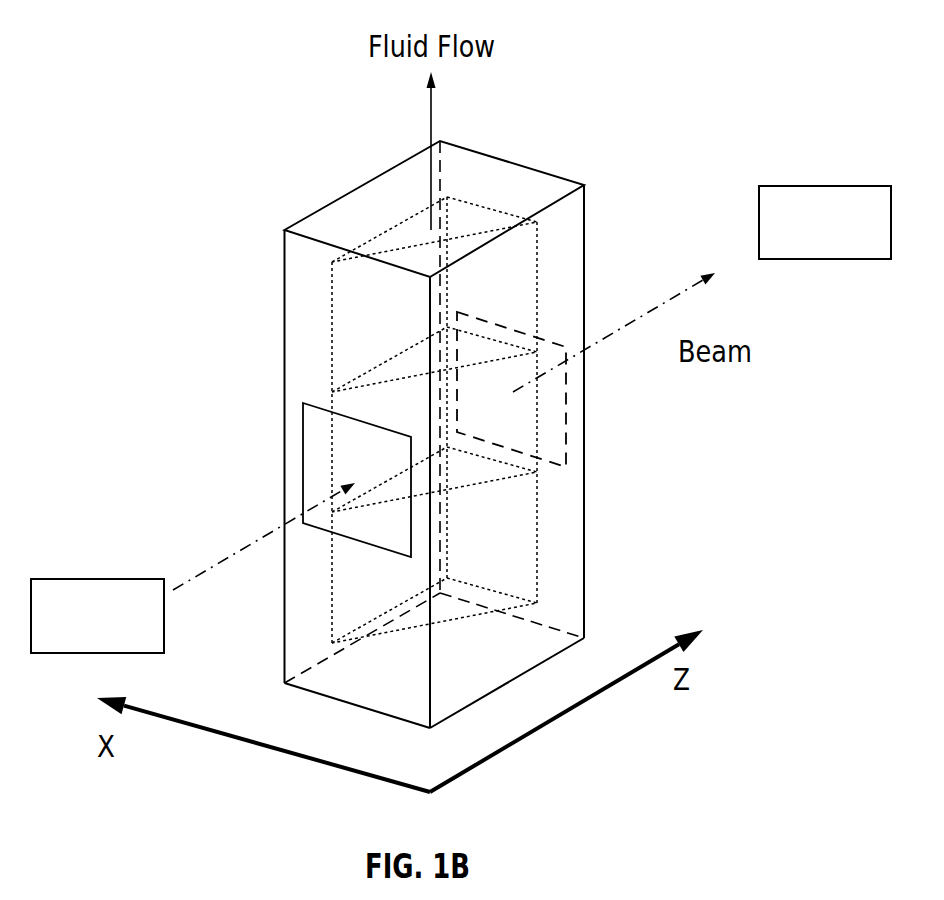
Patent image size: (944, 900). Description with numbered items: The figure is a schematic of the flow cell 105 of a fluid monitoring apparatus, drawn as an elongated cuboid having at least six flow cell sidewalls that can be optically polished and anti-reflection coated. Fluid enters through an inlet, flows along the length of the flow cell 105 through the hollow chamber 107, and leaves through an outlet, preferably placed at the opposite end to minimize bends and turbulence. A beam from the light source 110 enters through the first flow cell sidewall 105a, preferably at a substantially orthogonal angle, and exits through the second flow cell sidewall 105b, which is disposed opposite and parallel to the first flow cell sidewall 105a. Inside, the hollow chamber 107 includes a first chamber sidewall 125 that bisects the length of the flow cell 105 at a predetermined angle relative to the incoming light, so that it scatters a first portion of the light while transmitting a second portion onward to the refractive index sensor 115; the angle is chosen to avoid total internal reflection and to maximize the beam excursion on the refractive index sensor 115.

The flow cell 105 is at (265, 47).
The first flow cell sidewall 105a is at (303, 329).
The second flow cell sidewall 105b is at (585, 203).
The hollow chamber 107 is at (403, 202).
The light source 110 is at (193, 568).
The refractive index sensor 115 is at (702, 289).
The first chamber sidewall 125 is at (515, 277).